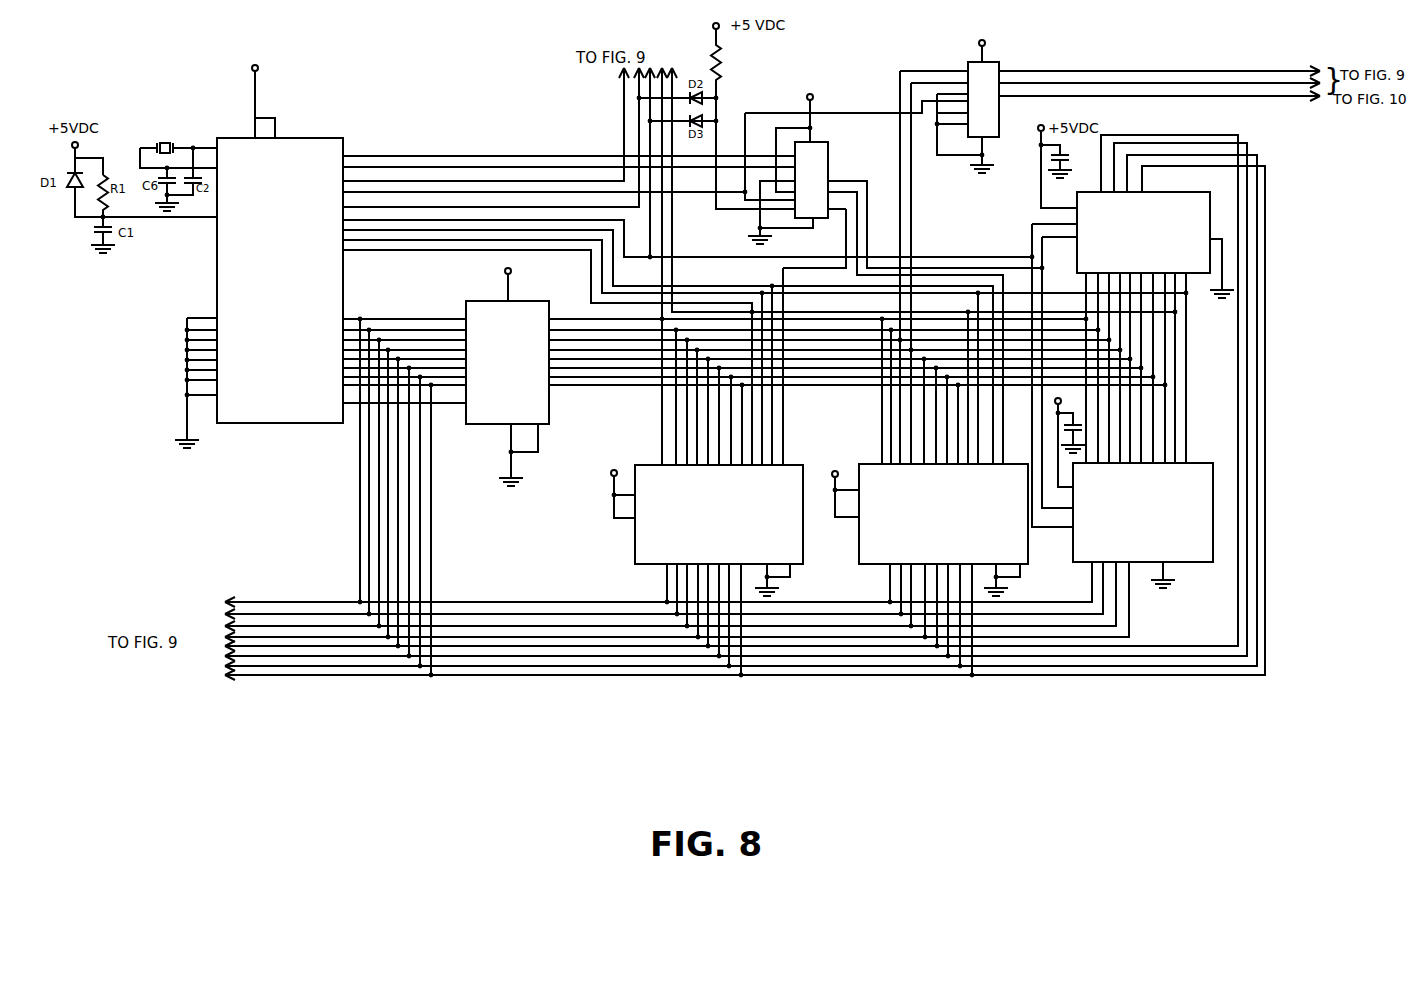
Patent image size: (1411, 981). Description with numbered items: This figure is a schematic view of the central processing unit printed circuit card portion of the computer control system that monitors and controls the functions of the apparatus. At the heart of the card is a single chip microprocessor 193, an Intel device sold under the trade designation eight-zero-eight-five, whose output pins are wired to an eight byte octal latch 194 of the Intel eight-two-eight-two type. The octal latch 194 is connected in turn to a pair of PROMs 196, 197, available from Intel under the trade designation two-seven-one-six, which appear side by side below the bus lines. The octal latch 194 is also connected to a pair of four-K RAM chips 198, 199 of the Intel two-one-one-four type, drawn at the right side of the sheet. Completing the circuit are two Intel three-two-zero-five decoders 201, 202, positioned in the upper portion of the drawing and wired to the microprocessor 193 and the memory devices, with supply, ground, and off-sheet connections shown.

The single chip microprocessor 193 is at (284, 412).
The eight byte octal latch chip 194 is at (490, 412).
The PROM 196 is at (641, 537).
The PROM 197 is at (865, 538).
The 4K RAM chip 198 is at (1193, 542).
The 4K RAM chip 199 is at (1168, 210).
The decoder 201 is at (815, 170).
The decoder 202 is at (988, 120).